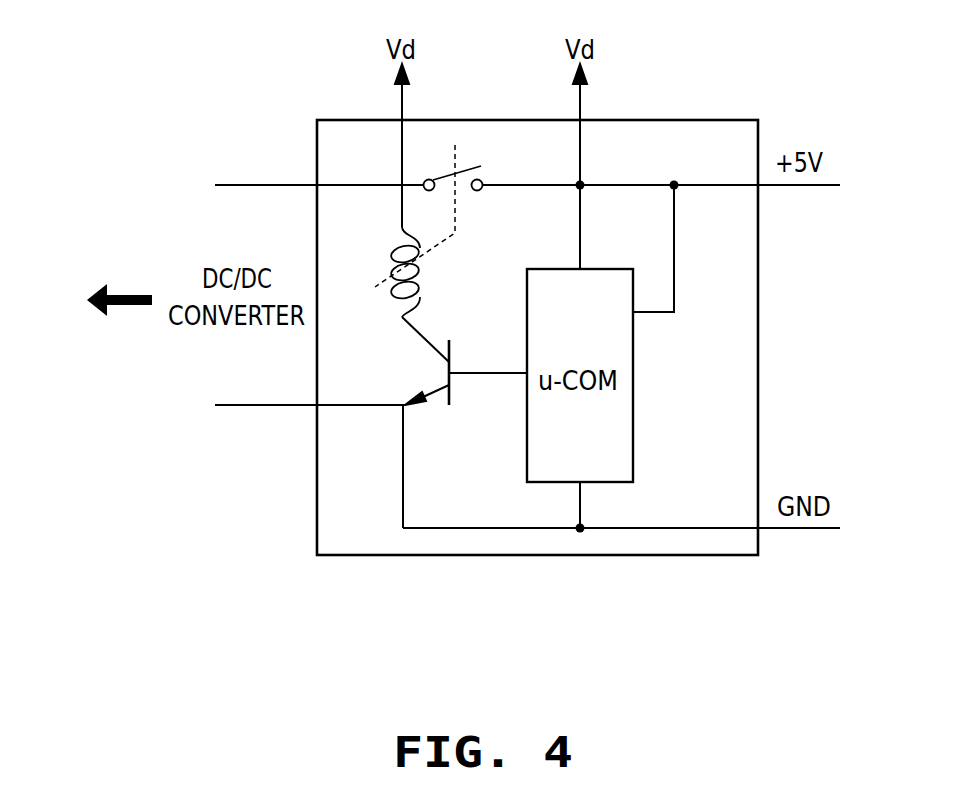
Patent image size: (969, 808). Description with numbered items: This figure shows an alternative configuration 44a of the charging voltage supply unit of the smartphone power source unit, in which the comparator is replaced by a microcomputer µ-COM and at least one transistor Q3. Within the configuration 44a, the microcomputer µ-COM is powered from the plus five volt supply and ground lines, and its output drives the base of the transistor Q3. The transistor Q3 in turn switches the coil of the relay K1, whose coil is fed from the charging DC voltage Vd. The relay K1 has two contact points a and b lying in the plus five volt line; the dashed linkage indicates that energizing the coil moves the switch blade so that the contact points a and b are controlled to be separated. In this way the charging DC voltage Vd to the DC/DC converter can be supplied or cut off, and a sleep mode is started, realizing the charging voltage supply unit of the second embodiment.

The charging voltage supply unit configuration 44a is at (680, 120).
The relay K1 is at (425, 272).
The transistor Q3 is at (456, 361).
The contact point a is at (446, 170).
The contact point b is at (488, 170).